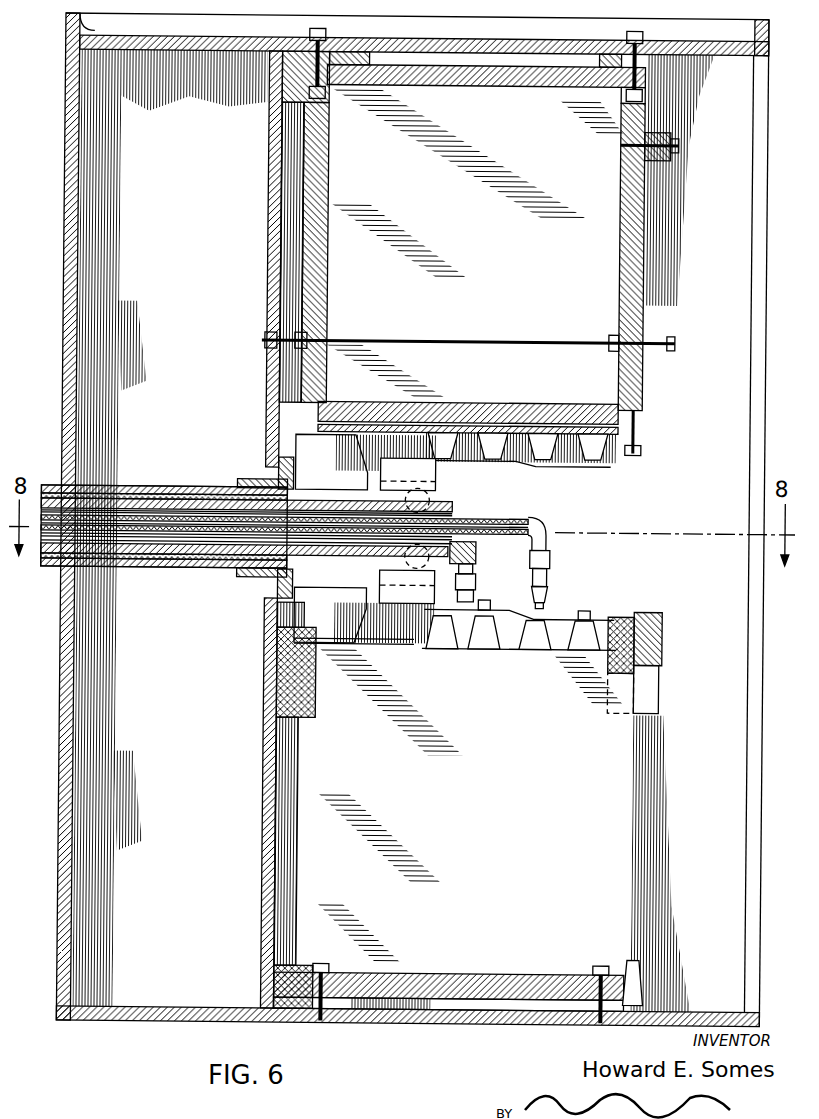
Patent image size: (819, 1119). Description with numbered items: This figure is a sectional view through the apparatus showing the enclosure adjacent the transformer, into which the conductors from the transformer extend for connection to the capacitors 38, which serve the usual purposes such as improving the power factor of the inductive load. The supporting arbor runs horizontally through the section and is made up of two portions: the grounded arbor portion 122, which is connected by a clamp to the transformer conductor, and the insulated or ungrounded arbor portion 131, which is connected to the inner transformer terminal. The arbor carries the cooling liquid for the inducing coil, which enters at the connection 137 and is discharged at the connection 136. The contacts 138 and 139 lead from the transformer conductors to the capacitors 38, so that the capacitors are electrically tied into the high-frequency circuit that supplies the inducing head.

The capacitors 38 is at (478, 391).
The grounded arbor portion 122 is at (196, 486).
The insulated arbor portion 131 is at (195, 560).
The discharge connection 136 is at (556, 556).
The inlet connection 137 is at (479, 585).
The contact 138 is at (252, 479).
The contact 139 is at (436, 494).